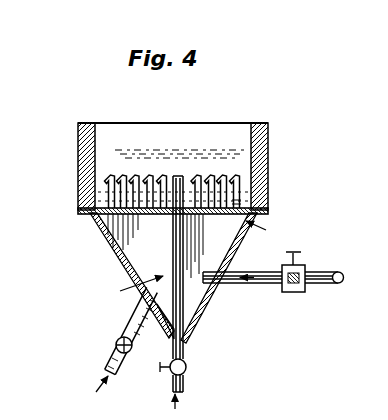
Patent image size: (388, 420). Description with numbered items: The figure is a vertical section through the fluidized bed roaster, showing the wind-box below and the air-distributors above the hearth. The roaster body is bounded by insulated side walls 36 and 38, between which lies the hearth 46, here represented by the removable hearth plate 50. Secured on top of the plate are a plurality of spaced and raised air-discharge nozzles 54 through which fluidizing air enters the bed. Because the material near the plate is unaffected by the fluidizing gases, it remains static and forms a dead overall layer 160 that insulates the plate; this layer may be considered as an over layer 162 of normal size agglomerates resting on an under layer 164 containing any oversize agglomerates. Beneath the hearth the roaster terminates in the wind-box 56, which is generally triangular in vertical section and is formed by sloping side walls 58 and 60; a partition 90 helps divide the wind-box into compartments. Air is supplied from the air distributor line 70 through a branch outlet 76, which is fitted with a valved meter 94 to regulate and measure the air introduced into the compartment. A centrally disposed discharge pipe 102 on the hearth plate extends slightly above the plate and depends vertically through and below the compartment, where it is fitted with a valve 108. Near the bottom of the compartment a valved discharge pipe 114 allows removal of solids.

The side wall 36 is at (78, 155).
The side wall 38 is at (268, 150).
The air-discharge nozzles 54 is at (222, 175).
The over layer 162 is at (248, 182).
The under layer 164 is at (250, 198).
The dead overall layer 160 is at (258, 207).
The partition 90 is at (132, 230).
The hearth plate 50 is at (212, 218).
The valve 108 is at (184, 365).
The side wall of wind-box 60 is at (124, 262).
The side wall of wind-box 58 is at (208, 297).
The hearth 46 is at (268, 230).
The wind-box 56 is at (129, 291).
The discharge pipe 102 is at (168, 320).
The valved discharge pipe 114 is at (138, 324).
The branch outlet 76 is at (271, 285).
The air distributor line 70 is at (343, 281).
The valved meter 94 is at (302, 268).